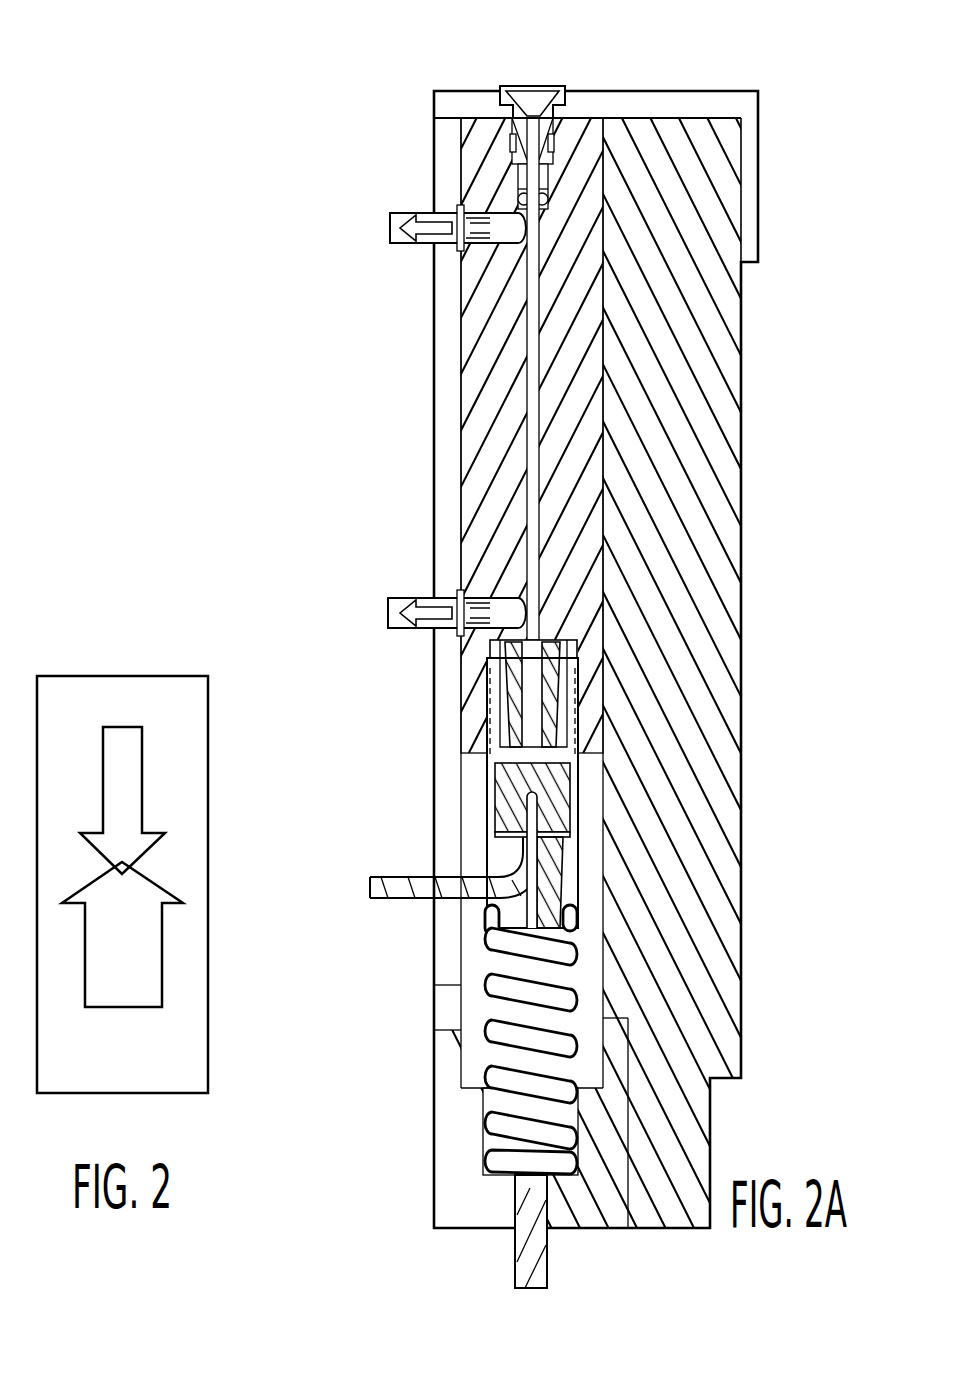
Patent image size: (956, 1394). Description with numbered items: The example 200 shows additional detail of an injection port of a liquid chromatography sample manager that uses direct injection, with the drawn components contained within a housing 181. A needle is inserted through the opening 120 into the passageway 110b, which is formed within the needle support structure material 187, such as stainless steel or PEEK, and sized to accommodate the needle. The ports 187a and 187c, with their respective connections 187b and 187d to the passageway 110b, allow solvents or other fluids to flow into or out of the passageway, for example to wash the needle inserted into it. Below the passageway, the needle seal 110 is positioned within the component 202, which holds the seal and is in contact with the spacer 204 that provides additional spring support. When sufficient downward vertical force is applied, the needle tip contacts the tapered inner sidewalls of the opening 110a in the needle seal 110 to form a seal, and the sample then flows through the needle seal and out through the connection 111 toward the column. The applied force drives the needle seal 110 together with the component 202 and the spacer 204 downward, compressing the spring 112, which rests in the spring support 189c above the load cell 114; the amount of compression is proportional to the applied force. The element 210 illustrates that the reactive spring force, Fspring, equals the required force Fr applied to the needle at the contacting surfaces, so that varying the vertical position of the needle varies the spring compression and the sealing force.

In FIG. 2A, the example 200 is at (351, 58).
In FIG. 2A, the opening 120 is at (530, 105).
In FIG. 2A, the housing 181 is at (758, 226).
In FIG. 2A, the needle support structure material 187 is at (480, 475).
In FIG. 2A, the port 187a is at (393, 229).
In FIG. 2A, the connection 187b is at (458, 212).
In FIG. 2A, the port 187c is at (392, 613).
In FIG. 2A, the connection 187d is at (456, 634).
In FIG. 2A, the needle seal 110 is at (568, 744).
In FIG. 2A, the opening 110a is at (535, 648).
In FIG. 2A, the passageway 110b is at (530, 378).
In FIG. 2A, the component 202 is at (498, 781).
In FIG. 2A, the spacer 204 is at (498, 850).
In FIG. 2A, the connection 111 is at (368, 888).
In FIG. 2A, the spring 112 is at (488, 983).
In FIG. 2A, the spring support 189c is at (448, 1141).
In FIG. 2A, the load cell 114 is at (518, 1278).
In FIG. 2, the element 210 is at (100, 676).